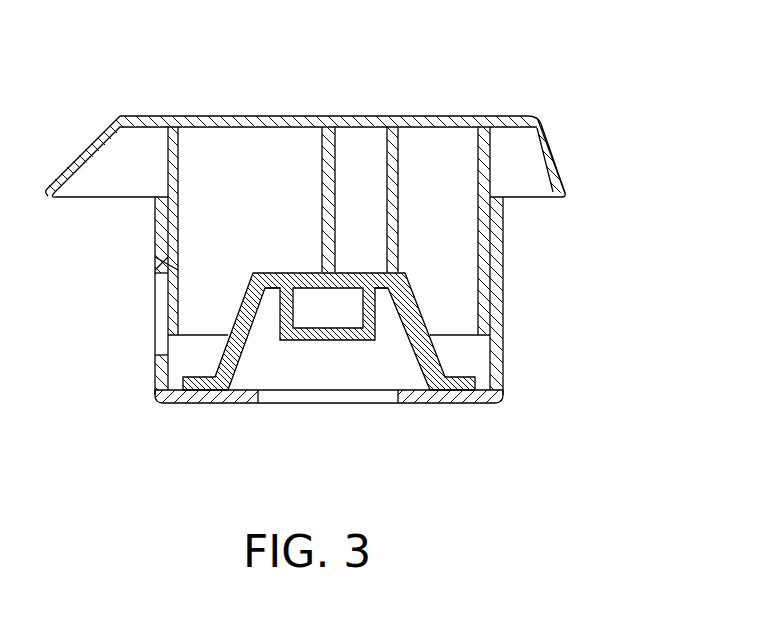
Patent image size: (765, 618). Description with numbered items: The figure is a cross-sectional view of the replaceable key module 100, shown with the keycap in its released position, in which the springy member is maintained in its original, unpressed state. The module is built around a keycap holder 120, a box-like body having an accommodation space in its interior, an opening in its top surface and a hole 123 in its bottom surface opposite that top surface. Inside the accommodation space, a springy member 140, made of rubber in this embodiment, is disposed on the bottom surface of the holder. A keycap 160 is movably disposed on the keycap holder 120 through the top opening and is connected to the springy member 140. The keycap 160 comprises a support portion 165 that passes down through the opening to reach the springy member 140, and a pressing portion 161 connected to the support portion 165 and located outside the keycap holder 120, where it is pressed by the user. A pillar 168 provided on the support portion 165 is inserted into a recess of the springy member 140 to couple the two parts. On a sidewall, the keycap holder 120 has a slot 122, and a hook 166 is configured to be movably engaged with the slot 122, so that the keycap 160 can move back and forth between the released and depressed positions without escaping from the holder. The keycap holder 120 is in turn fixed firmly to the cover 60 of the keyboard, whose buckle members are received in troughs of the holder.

The replaceable key module 100 is at (703, 52).
The cover 60 is at (510, 300).
The keycap holder 120 is at (165, 364).
The slot 122 is at (162, 315).
The hole 123 is at (356, 428).
The springy member 140 is at (430, 356).
The keycap 160 is at (648, 153).
The pressing portion 161 is at (552, 172).
The support portion 165 is at (445, 228).
The hook 166 is at (160, 258).
The pillar 168 is at (325, 312).